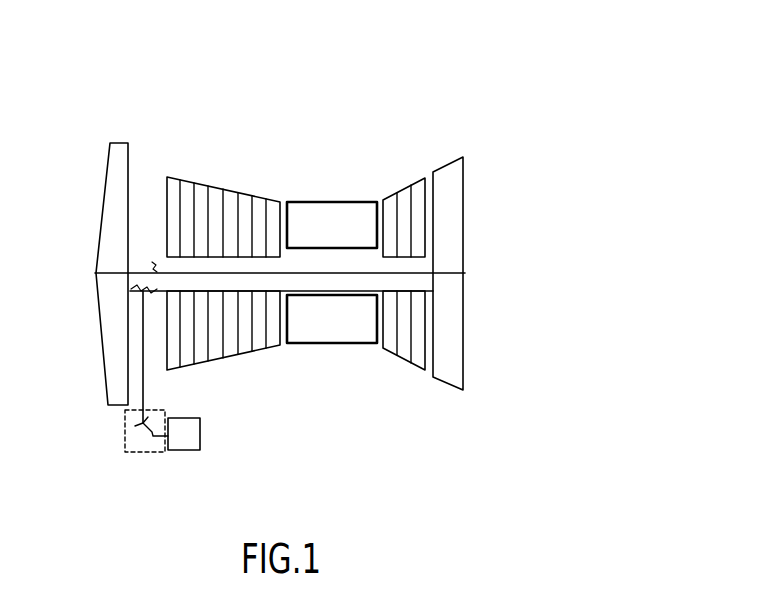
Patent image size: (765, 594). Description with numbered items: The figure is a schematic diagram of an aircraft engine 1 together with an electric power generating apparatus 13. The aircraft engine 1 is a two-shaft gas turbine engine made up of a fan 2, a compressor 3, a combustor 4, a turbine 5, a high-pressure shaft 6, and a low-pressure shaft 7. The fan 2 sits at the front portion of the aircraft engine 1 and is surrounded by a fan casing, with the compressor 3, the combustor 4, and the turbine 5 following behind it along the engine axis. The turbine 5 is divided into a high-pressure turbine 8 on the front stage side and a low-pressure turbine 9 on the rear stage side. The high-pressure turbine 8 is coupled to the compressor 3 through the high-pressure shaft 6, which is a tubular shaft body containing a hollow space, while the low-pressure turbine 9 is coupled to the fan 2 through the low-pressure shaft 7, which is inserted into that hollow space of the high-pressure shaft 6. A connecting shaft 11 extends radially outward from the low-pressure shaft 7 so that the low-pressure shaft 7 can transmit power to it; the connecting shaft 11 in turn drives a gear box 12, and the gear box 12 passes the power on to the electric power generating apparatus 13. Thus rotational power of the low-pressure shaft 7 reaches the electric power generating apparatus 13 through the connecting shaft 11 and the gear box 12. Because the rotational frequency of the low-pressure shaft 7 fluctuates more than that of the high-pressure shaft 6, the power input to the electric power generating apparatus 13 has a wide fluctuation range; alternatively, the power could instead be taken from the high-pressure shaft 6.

The aircraft engine 1 is at (405, 92).
The fan 2 is at (118, 143).
The compressor 3 is at (202, 178).
The combustor 4 is at (300, 345).
The turbine 5 is at (418, 316).
The high-pressure shaft 6 is at (313, 297).
The low-pressure shaft 7 is at (342, 275).
The high-pressure turbine 8 is at (403, 360).
The low-pressure turbine 9 is at (445, 295).
The connecting shaft 11 is at (142, 335).
The gear box 12 is at (137, 458).
The electric power generating apparatus 13 is at (177, 452).